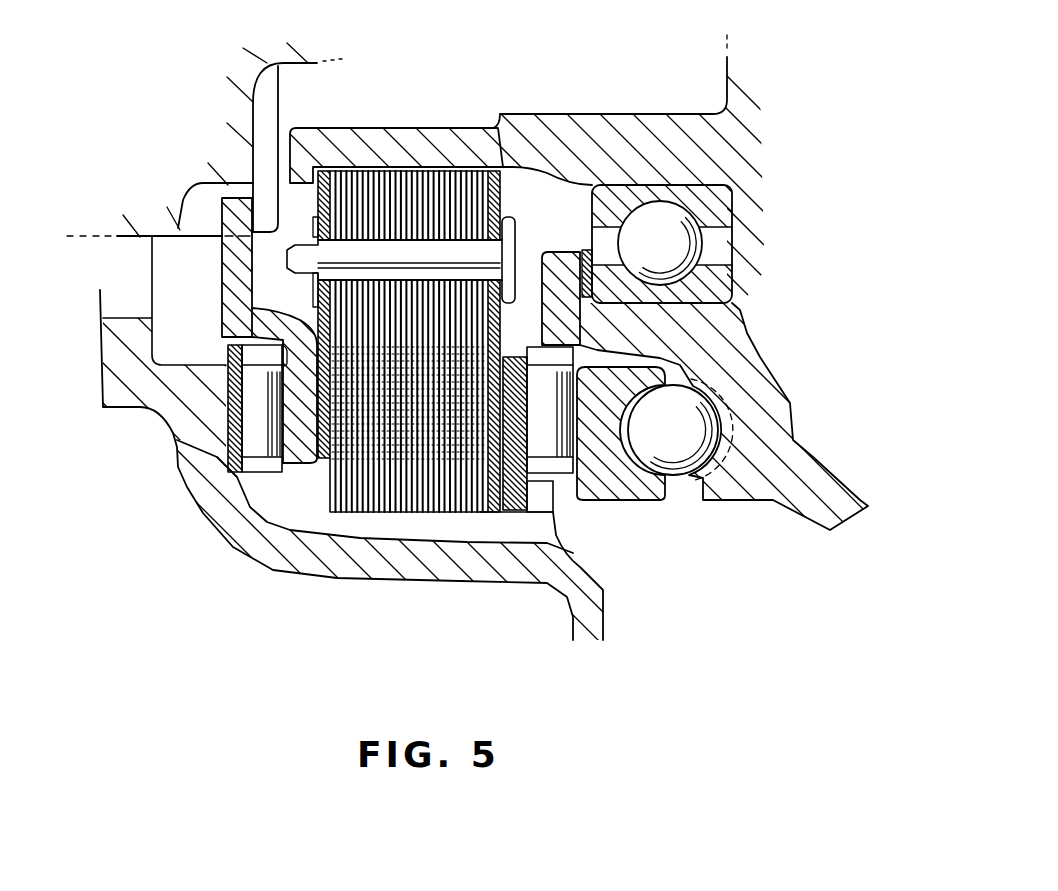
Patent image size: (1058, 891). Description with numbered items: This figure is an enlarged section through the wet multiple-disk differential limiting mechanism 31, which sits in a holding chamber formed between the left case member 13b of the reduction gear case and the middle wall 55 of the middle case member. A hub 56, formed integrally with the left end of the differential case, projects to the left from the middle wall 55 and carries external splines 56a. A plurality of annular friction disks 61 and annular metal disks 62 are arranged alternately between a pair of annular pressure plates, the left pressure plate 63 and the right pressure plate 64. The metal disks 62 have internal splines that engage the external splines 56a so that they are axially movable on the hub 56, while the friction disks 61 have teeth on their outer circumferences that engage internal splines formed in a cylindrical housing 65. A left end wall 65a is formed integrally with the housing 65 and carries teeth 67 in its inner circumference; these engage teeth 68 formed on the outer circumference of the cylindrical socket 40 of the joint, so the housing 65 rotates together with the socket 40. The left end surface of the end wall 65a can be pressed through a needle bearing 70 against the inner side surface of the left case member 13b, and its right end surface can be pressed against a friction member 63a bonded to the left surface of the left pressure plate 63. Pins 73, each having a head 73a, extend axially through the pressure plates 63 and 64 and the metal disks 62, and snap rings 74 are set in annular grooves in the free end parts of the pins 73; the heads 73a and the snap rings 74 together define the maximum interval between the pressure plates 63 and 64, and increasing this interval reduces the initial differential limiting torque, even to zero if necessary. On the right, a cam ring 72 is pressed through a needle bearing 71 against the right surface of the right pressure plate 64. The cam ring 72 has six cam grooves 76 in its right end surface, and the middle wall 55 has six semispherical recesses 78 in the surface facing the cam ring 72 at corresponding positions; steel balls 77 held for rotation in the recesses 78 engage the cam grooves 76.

The left case member 13b is at (190, 490).
The wet multiple-disk differential limiting mechanism 31 is at (529, 445).
The cylindrical socket 40 is at (218, 110).
The middle wall 55 is at (767, 483).
The hub 56 is at (393, 138).
The external splines 56a is at (510, 173).
The annular friction disks 61 is at (493, 497).
The annular metal disks 62 is at (483, 513).
The left pressure plate 63 is at (260, 307).
The friction member 63a is at (240, 443).
The right pressure plate 64 is at (517, 287).
The cylindrical housing 65 is at (305, 497).
The left end wall 65a is at (250, 507).
The teeth 67 is at (230, 222).
The teeth 68 is at (217, 187).
The needle bearing 70 is at (235, 432).
The needle bearing 71 is at (557, 463).
The cam ring 72 is at (610, 490).
The pins 73 is at (327, 260).
The head 73a is at (513, 223).
The snap rings 74 is at (313, 280).
The cam grooves 76 is at (633, 490).
The balls 77 is at (677, 477).
The semispherical recesses 78 is at (730, 443).